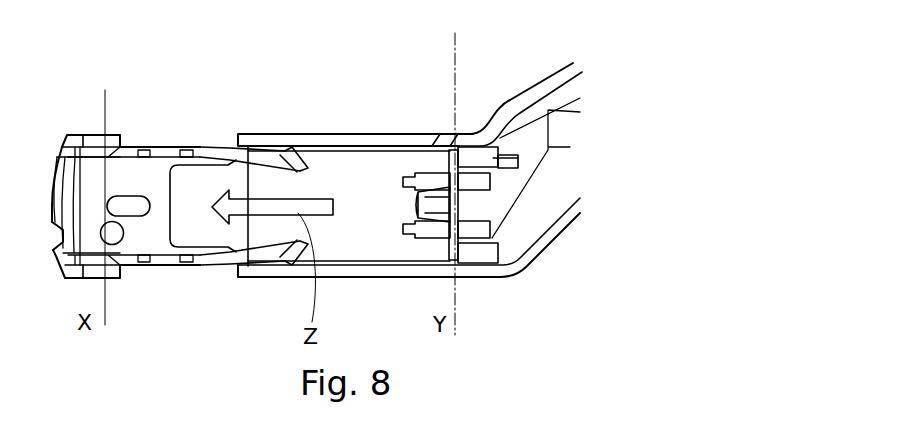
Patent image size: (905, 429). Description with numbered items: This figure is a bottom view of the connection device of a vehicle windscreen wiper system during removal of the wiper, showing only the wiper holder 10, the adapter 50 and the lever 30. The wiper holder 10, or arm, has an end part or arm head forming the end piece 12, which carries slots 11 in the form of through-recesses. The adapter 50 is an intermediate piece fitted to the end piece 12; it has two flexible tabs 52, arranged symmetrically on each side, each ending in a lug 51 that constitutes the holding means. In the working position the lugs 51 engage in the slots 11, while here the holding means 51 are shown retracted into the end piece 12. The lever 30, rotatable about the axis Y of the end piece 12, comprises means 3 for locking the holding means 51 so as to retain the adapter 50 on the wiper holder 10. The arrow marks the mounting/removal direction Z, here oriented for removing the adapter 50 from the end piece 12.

The locking means 3 is at (517, 163).
The wiper holder 10 is at (506, 90).
The slots 11 is at (443, 143).
The end piece 12 is at (321, 126).
The lever 30 is at (457, 205).
The adapter 50 is at (80, 126).
The lugs 51 is at (292, 148).
The flexible tabs 52 is at (237, 148).